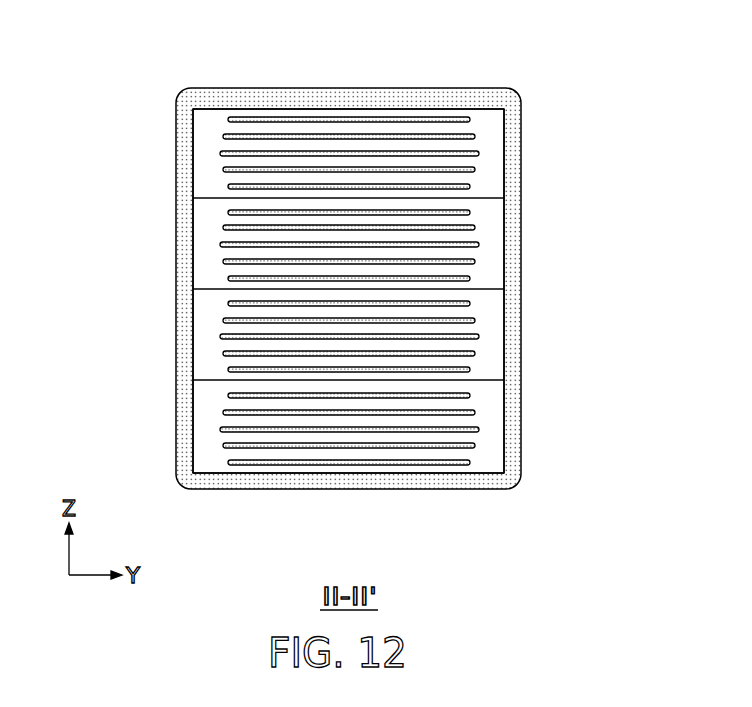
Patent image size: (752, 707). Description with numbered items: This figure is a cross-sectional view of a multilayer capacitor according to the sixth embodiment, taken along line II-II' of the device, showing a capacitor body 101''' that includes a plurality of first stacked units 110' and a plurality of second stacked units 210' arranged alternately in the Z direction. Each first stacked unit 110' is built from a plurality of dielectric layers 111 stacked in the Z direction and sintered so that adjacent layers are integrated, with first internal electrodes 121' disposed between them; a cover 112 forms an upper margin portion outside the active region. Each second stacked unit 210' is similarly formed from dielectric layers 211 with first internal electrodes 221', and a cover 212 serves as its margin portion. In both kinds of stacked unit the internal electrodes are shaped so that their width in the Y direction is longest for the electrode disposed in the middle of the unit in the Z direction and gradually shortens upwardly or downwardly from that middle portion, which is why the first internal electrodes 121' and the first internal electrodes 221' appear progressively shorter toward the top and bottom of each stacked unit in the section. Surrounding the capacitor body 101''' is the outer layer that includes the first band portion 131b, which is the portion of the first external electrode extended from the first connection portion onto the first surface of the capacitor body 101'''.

The capacitor body 101''' is at (353, 284).
The first band portion 131b is at (512, 448).
The cover 112 is at (350, 110).
The cover 212 is at (492, 278).
The first stacked unit 110' is at (302, 291).
The second stacked unit 210' is at (301, 367).
The dielectric layer 111 is at (243, 163).
The first internal electrode 121' is at (410, 197).
The dielectric layer 211 is at (243, 242).
The first internal electrode 221' is at (410, 384).